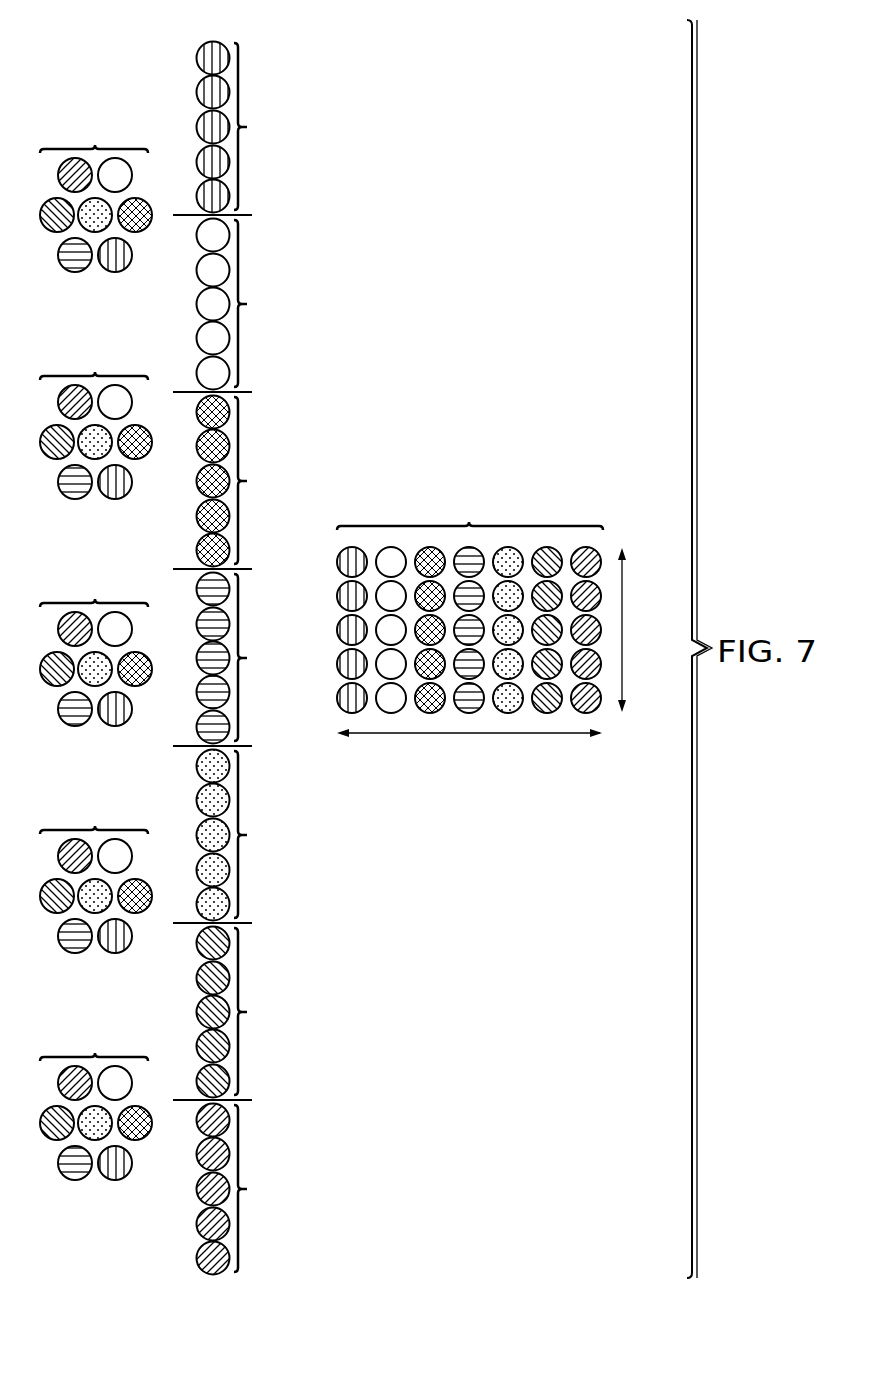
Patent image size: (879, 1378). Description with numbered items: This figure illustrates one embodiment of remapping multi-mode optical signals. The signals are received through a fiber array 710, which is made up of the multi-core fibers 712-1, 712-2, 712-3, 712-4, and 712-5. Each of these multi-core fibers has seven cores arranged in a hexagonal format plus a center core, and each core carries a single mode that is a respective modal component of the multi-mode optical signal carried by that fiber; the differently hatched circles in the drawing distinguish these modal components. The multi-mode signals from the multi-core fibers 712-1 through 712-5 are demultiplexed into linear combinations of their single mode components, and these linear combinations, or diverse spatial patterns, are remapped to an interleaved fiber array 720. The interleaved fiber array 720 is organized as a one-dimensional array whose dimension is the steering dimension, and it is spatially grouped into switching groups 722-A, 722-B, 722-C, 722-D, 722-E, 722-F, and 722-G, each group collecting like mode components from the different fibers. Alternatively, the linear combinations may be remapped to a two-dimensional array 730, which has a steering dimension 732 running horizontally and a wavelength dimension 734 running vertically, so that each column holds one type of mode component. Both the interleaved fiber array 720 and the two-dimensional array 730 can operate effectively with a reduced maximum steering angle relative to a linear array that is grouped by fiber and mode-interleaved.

The fiber array 710 is at (83, 76).
The MCF 712-1 is at (96, 194).
The MCF 712-2 is at (96, 421).
The MCF 712-3 is at (96, 648).
The MCF 712-4 is at (96, 875).
The MCF 712-5 is at (96, 1102).
The interleaved fiber array 720 is at (181, 62).
The switching group 722-A is at (253, 127).
The switching group 722-B is at (253, 304).
The switching group 722-C is at (253, 481).
The switching group 722-D is at (253, 658).
The switching group 722-E is at (253, 835).
The switching group 722-F is at (253, 1012).
The switching group 722-G is at (253, 1189).
The two-dimensional array 730 is at (470, 602).
The steering dimension 732 is at (469, 735).
The wavelength dimension 734 is at (625, 631).